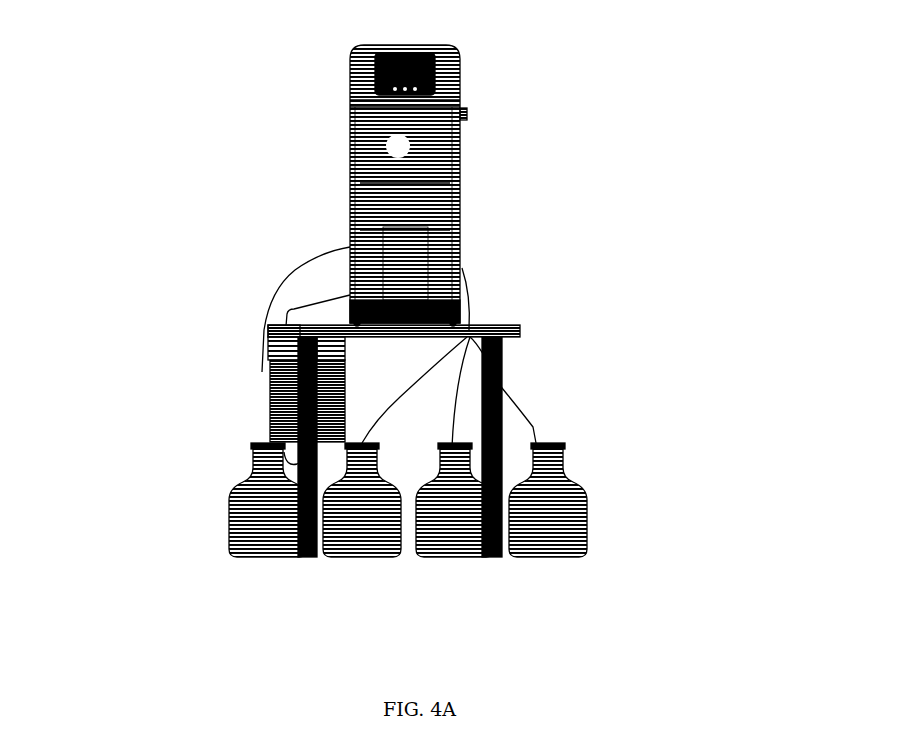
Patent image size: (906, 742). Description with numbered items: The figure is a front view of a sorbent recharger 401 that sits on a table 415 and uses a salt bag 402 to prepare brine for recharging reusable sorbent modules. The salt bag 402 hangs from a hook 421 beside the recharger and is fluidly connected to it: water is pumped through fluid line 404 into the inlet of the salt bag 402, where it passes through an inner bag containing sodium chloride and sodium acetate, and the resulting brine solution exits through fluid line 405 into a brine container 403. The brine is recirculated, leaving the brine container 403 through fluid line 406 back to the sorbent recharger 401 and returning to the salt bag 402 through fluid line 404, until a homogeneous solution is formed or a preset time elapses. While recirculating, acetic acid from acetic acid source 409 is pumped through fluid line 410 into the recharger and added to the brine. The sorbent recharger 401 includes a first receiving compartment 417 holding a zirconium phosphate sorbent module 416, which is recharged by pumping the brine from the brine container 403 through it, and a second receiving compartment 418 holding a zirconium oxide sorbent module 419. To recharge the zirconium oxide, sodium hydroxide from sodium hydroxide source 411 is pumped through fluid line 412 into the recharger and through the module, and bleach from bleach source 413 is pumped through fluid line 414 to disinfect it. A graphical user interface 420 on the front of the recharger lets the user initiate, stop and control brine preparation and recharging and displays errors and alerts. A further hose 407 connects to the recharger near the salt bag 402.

The sorbent recharger 401 is at (458, 71).
The salt bag 402 is at (280, 403).
The brine container 403 is at (242, 515).
The fluid line 404 is at (290, 333).
The fluid line 405 is at (305, 462).
The fluid line 406 is at (268, 300).
The hose 407 is at (298, 311).
The acetic acid source 409 is at (335, 545).
The fluid line 410 is at (388, 408).
The sodium hydroxide source 411 is at (472, 543).
The fluid line 412 is at (450, 447).
The bleach source 413 is at (548, 543).
The fluid line 414 is at (533, 427).
The table 415 is at (520, 332).
The zirconium phosphate sorbent module 416 is at (418, 267).
The first receiving compartment 417 is at (437, 206).
The second receiving compartment 418 is at (445, 147).
The zirconium oxide sorbent module 419 is at (387, 145).
The graphical user interface 420 is at (375, 72).
The hook 421 is at (302, 355).